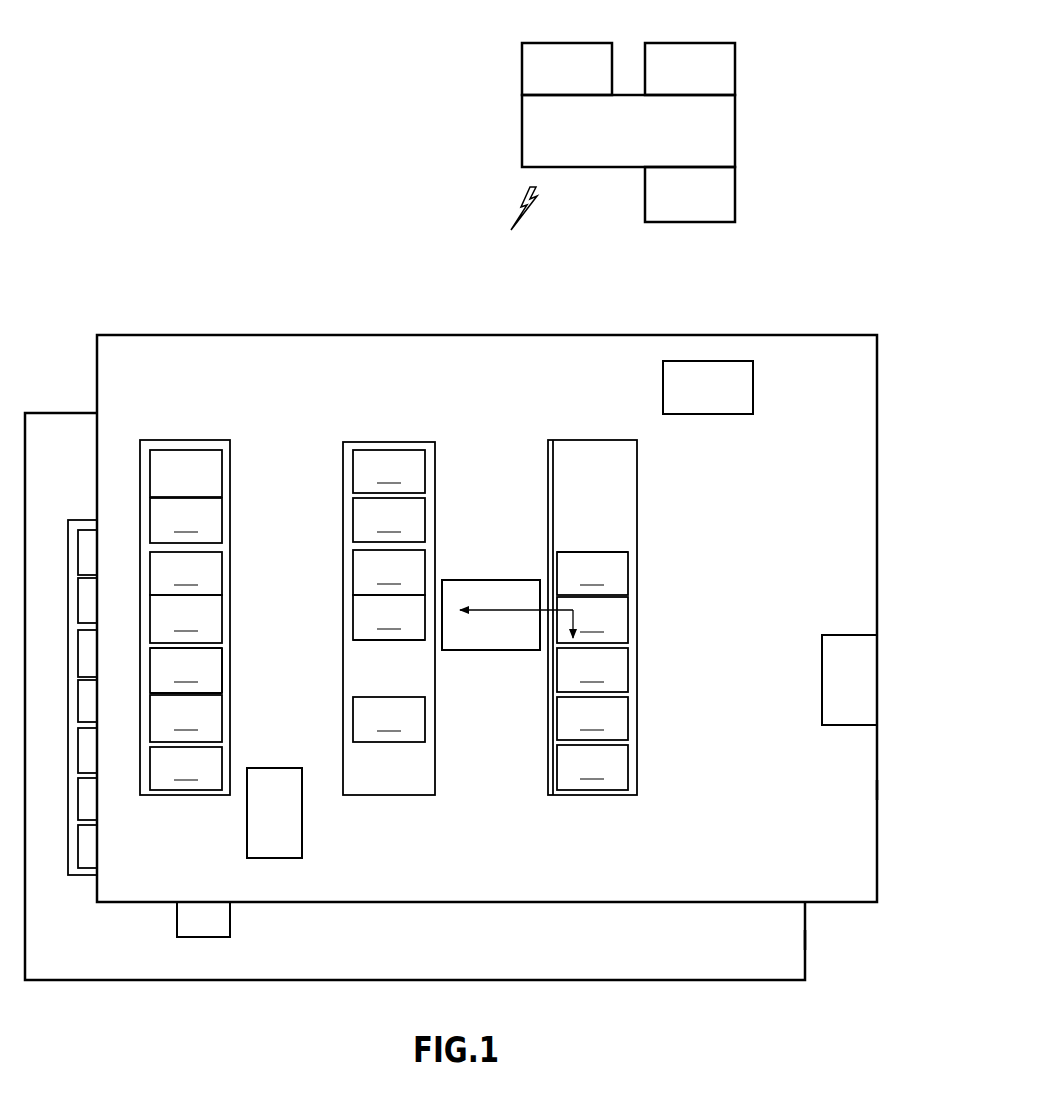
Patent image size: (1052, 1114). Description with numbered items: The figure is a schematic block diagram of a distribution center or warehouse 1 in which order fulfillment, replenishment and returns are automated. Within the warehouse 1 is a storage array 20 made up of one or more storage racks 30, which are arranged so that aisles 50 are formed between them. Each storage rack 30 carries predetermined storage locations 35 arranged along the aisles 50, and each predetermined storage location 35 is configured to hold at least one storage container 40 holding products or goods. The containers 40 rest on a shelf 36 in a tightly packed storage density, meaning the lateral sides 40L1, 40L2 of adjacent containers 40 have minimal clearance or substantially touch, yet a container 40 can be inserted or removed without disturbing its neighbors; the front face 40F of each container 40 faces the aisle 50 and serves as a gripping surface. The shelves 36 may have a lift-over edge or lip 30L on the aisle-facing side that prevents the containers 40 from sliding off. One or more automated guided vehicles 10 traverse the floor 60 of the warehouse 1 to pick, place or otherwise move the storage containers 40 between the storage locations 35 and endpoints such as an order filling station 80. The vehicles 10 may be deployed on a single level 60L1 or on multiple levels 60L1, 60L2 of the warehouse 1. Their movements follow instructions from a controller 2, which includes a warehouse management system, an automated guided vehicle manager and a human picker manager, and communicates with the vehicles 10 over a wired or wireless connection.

The warehouse 1 is at (97, 278).
The controller 2 is at (736, 130).
The automated guided vehicle 10 is at (708, 361).
The storage array 20 is at (504, 358).
The storage rack 30 is at (183, 795).
The lip 30L is at (553, 475).
The predetermined storage location 35 is at (630, 572).
The shelf 36 is at (603, 522).
The storage container 40 is at (185, 450).
The front face 40F is at (213, 677).
The lateral side 40L1 is at (187, 647).
The lateral side 40L2 is at (207, 695).
The aisle 50 is at (311, 418).
The floor 60 is at (270, 520).
The level 60L1 is at (878, 792).
The level 60L2 is at (806, 940).
The order filling station 80 is at (850, 670).